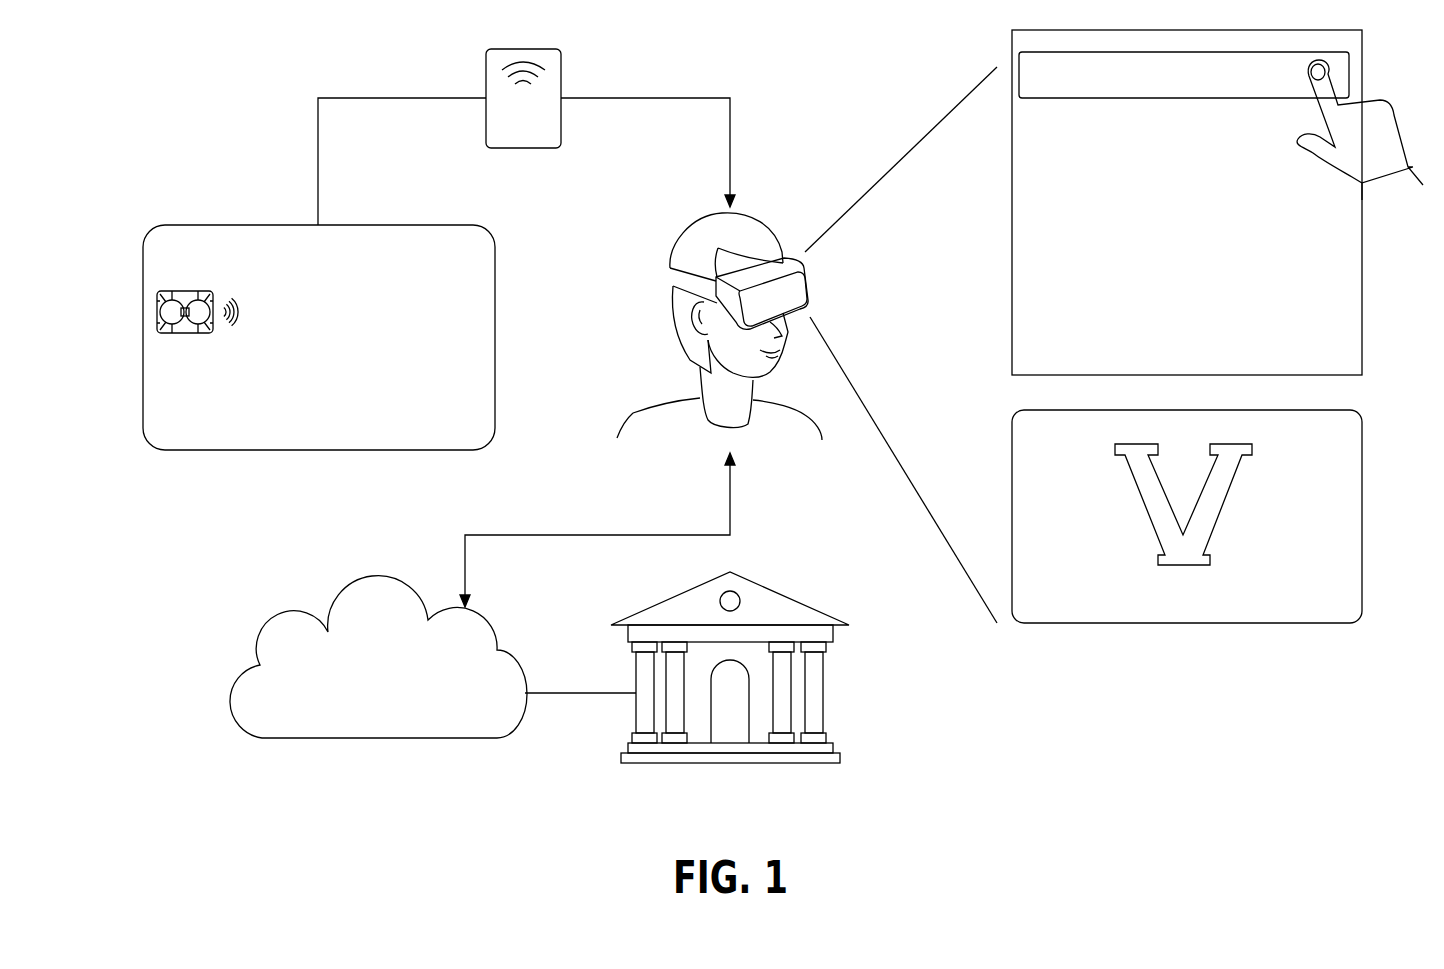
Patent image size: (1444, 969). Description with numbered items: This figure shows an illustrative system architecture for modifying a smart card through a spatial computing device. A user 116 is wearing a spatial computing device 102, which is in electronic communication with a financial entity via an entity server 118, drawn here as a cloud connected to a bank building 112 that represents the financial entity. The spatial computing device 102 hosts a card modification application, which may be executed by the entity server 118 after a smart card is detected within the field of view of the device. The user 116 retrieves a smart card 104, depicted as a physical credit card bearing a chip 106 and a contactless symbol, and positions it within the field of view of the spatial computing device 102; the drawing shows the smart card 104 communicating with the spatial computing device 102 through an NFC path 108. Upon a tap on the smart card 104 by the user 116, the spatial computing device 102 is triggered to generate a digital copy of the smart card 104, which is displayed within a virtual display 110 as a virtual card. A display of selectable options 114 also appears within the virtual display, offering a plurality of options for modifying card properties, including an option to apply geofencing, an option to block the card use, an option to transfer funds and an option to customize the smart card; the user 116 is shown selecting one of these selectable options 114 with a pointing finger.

The spatial computing device 102 is at (812, 288).
The smart card 104 is at (218, 225).
The chip 106 is at (157, 307).
The NFC reader 108 is at (562, 77).
The virtual display 110 is at (1297, 623).
The bank entity 112 is at (823, 695).
The selectable options 114 is at (1260, 30).
The user 116 is at (633, 413).
The entity server 118 is at (380, 594).